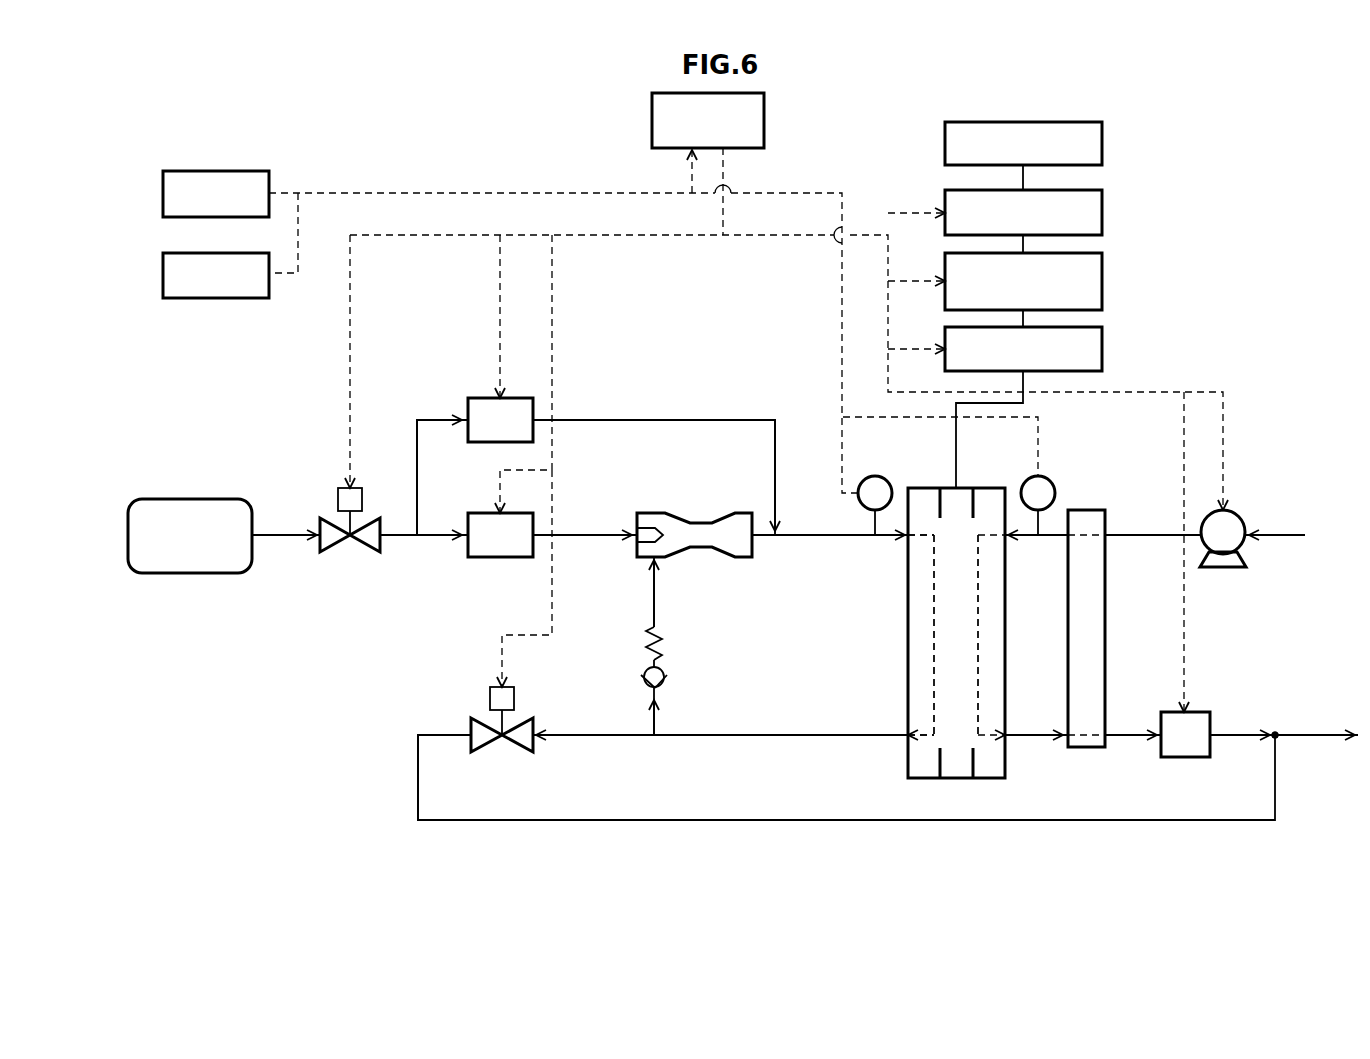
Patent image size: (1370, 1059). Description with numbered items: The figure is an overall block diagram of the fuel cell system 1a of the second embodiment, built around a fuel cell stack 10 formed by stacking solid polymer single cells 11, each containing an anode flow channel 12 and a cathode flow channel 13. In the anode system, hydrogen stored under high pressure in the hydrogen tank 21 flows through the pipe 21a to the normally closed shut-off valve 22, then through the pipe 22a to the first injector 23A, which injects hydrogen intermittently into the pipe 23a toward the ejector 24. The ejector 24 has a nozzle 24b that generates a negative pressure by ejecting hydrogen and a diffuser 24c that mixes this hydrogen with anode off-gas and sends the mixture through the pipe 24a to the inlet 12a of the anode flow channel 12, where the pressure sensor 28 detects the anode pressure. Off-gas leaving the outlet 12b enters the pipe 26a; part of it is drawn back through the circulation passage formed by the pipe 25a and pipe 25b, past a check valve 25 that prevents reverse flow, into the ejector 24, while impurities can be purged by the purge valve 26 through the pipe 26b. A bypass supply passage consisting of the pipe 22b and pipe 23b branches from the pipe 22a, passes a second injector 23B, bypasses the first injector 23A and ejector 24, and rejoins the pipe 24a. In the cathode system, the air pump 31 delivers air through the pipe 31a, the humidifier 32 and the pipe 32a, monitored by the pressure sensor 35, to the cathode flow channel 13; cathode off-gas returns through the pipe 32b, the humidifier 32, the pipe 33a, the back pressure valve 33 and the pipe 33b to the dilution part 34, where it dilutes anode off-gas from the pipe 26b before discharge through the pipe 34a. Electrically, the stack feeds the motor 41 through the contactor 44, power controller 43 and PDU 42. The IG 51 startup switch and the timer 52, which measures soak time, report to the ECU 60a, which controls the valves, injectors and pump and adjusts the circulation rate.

The fuel cell system 1a is at (443, 158).
The fuel cell stack 10 is at (1074, 497).
The single cell 11 is at (925, 505).
The anode flow channel 12 is at (934, 652).
The inlet of the anode flow channel 12a is at (905, 547).
The outlet of the anode flow channel 12b is at (905, 738).
The cathode flow channel 13 is at (978, 652).
The hydrogen tank 21 is at (190, 499).
The pipe 21a is at (290, 541).
The shut-off valve 22 is at (358, 547).
The pipe 22a is at (437, 541).
The bypass supply passage pipe 22b is at (428, 417).
The first injector 23A is at (480, 512).
The second injector 23B is at (480, 397).
The pipe 23a is at (600, 541).
The bypass supply passage pipe 23b is at (678, 418).
The ejector 24 is at (730, 512).
The pipe 24a is at (802, 533).
The nozzle 24b is at (644, 524).
The diffuser 24c is at (736, 558).
The check valve 25 is at (663, 688).
The pipe 25a is at (650, 710).
The pipe 25b is at (652, 608).
The purge valve 26 is at (512, 748).
The pipe 26a is at (612, 741).
The pipe 26b is at (728, 823).
The pressure sensor 28 is at (875, 476).
The air pump 31 is at (1243, 515).
The pipe 31a is at (1135, 541).
The humidifier 32 is at (1107, 642).
The pipe 32a is at (1035, 542).
The pipe 32b is at (1040, 741).
The back pressure valve 33 is at (1205, 712).
The pipe 33a is at (1123, 742).
The pipe 33b is at (1233, 742).
The dilution part 34 is at (1275, 733).
The pipe 34a is at (1320, 742).
The pressure sensor 35 is at (1053, 480).
The motor 41 is at (1102, 140).
The PDU 42 is at (1102, 209).
The power controller 43 is at (1102, 277).
The contactor 44 is at (1102, 345).
The IG 51 is at (216, 171).
The timer 52 is at (216, 253).
The ECU 60a is at (764, 131).